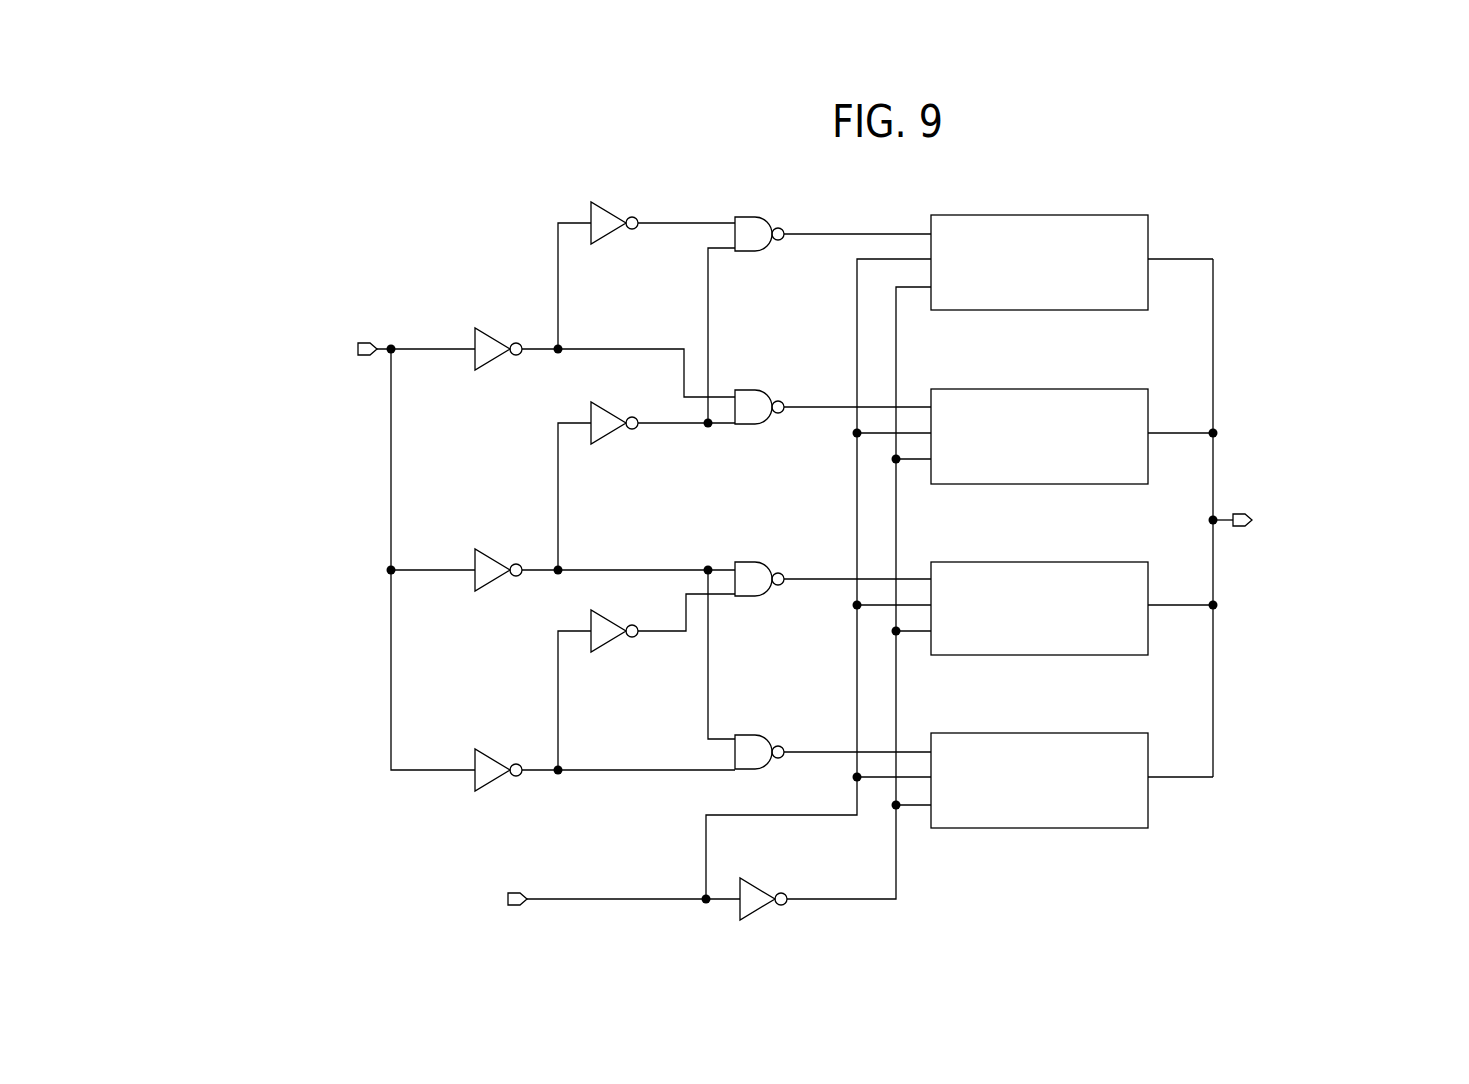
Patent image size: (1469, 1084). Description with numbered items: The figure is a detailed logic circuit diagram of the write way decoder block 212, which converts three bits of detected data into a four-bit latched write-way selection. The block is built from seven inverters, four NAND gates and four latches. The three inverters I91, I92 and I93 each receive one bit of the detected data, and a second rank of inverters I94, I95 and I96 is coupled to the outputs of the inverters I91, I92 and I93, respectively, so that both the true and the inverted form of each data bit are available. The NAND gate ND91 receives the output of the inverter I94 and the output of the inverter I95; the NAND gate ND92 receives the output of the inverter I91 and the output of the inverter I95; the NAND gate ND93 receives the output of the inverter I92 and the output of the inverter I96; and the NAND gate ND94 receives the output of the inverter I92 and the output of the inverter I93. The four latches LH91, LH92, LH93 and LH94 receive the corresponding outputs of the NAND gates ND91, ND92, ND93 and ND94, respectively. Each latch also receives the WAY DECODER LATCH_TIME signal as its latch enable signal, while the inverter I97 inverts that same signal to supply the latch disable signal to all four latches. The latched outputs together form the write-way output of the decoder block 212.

The write way decoder block 212 is at (1231, 166).
The inverter I91 is at (492, 337).
The inverter I92 is at (494, 562).
The inverter I93 is at (494, 759).
The inverter I94 is at (609, 212).
The inverter I95 is at (609, 416).
The inverter I96 is at (609, 624).
The inverter I97 is at (757, 887).
The NAND gate ND91 is at (772, 200).
The NAND gate ND92 is at (772, 377).
The NAND gate ND93 is at (772, 550).
The NAND gate ND94 is at (772, 720).
The latch LH91 is at (1050, 215).
The latch LH92 is at (1050, 389).
The latch LH93 is at (1050, 562).
The latch LH94 is at (1050, 733).